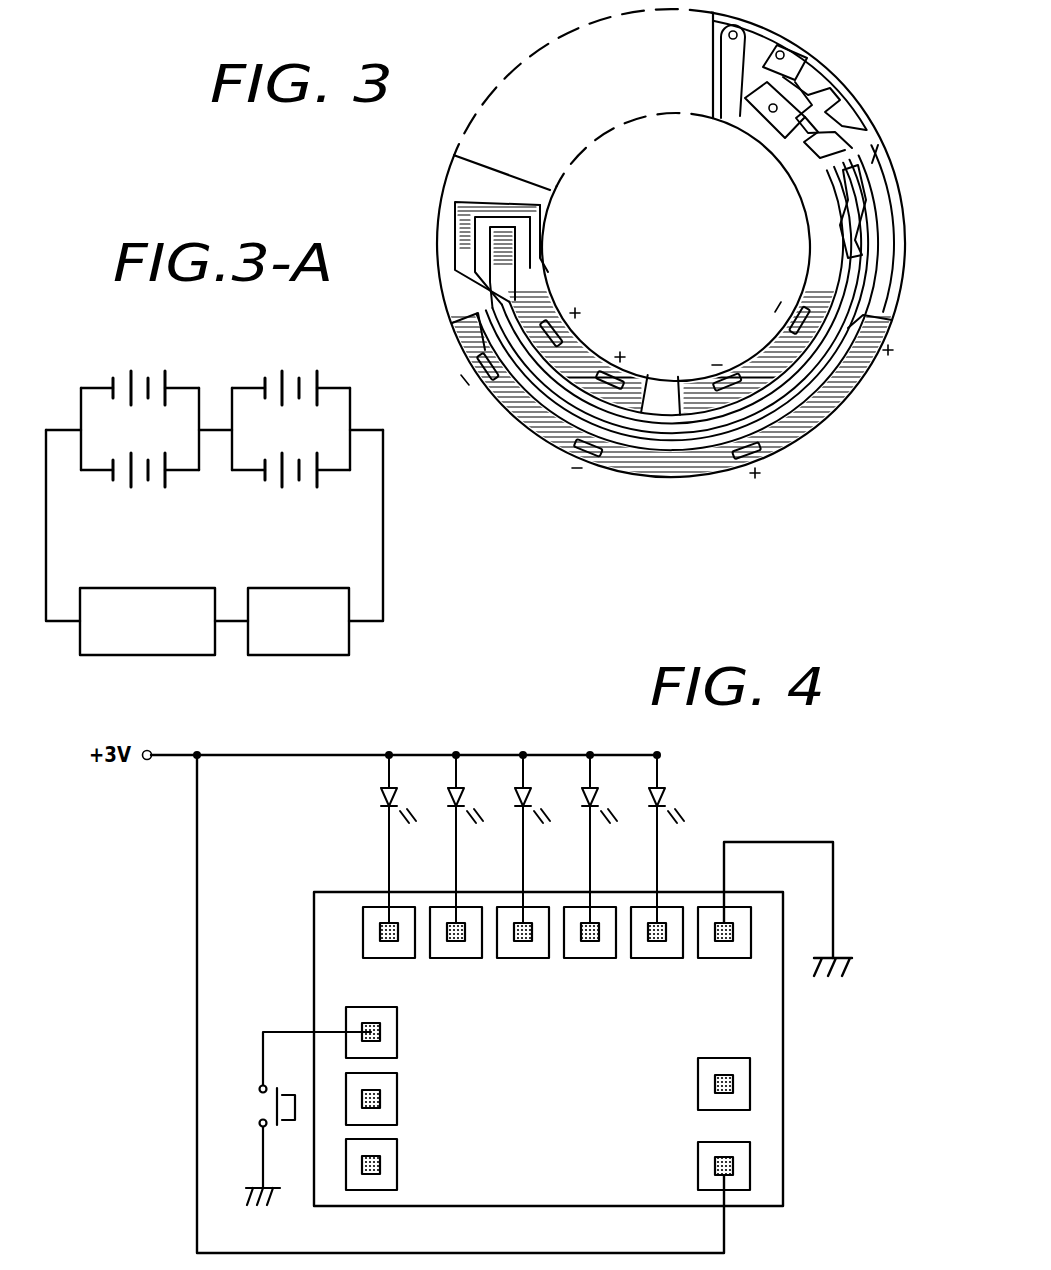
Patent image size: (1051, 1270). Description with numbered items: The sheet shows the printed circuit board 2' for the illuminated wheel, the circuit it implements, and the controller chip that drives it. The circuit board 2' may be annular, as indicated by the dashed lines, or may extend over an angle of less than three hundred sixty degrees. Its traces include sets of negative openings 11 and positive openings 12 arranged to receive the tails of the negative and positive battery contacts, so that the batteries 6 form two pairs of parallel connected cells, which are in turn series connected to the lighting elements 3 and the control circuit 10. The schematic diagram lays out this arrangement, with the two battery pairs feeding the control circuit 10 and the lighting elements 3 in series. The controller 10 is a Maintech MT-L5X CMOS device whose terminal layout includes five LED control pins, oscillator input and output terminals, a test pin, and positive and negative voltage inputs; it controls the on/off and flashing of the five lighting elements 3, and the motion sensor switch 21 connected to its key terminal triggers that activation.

In FIG. 3, the circuit board 2' is at (454, 231).
In FIG. 3-A, the lighting elements 3 is at (290, 656).
In FIG. 4, the lighting elements 3 is at (667, 783).
In FIG. 3-A, the batteries 6 is at (137, 375).
In FIG. 3-A, the circuit element 10 is at (145, 656).
In FIG. 4, the circuit element 10 is at (586, 1127).
In FIG. 3, the negative openings 11 is at (783, 327).
In FIG. 3-A, the negative openings 11 is at (68, 422).
In FIG. 3, the positive openings 12 is at (603, 373).
In FIG. 3-A, the positive openings 12 is at (203, 397).
In FIG. 4, the motion sensor switch 21 is at (252, 1090).